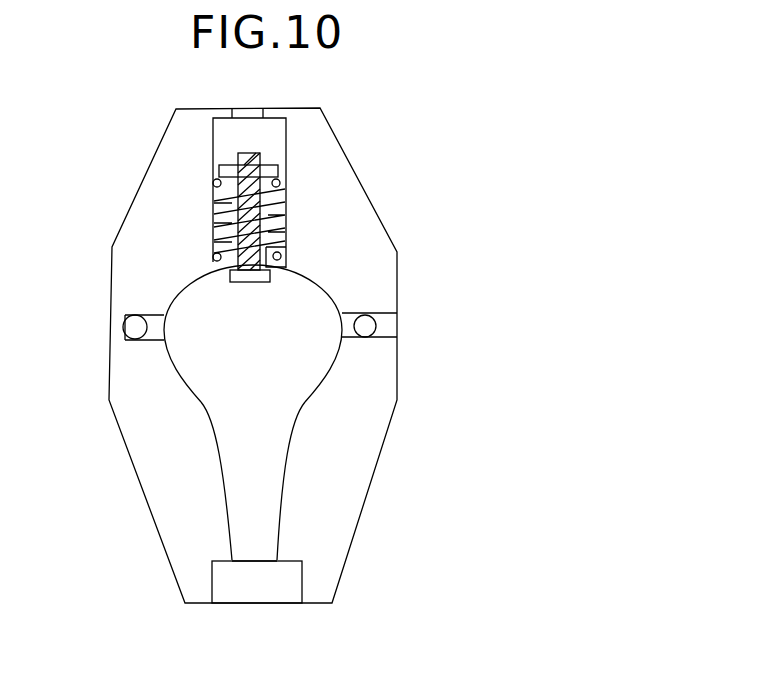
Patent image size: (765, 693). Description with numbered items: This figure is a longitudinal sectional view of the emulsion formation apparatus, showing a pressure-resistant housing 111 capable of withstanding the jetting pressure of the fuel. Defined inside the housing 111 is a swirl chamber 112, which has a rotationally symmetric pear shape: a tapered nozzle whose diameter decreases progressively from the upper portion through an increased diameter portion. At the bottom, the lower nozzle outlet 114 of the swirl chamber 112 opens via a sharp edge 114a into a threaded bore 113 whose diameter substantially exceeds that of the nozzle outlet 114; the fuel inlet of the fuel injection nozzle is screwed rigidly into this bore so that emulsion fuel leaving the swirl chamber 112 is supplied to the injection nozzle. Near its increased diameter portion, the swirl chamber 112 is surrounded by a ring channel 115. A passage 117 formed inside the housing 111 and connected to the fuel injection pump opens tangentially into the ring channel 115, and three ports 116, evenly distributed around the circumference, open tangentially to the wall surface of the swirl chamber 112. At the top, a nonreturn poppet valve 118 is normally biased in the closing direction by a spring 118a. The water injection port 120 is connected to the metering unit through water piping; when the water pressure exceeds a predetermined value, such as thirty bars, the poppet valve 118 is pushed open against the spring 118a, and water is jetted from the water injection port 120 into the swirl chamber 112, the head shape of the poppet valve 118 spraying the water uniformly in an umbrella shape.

The pressure-resistant housing 111 is at (315, 182).
The swirl chamber 112 is at (298, 390).
The threaded bore 113 is at (230, 578).
The lower nozzle outlet 114 is at (258, 550).
The sharp edge 114a is at (275, 563).
The ring channel 115 is at (130, 338).
The ports 116 is at (352, 312).
The passage 117 is at (385, 328).
The poppet valve 118 is at (215, 302).
The spring 118a is at (287, 233).
The water injection port 120 is at (287, 125).